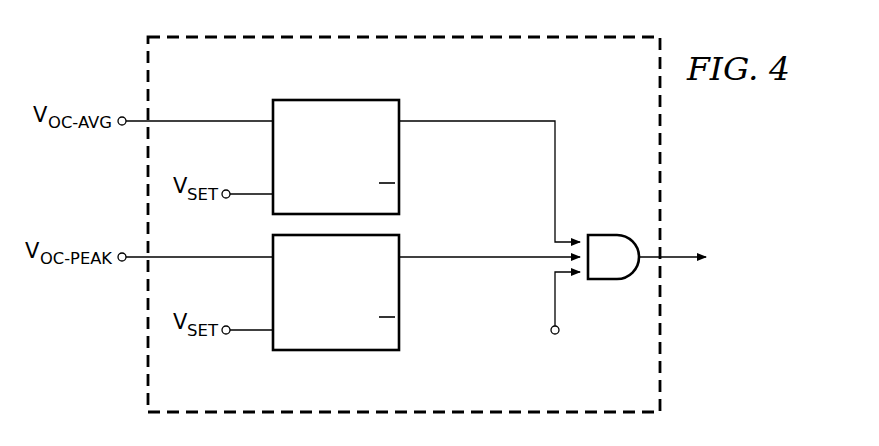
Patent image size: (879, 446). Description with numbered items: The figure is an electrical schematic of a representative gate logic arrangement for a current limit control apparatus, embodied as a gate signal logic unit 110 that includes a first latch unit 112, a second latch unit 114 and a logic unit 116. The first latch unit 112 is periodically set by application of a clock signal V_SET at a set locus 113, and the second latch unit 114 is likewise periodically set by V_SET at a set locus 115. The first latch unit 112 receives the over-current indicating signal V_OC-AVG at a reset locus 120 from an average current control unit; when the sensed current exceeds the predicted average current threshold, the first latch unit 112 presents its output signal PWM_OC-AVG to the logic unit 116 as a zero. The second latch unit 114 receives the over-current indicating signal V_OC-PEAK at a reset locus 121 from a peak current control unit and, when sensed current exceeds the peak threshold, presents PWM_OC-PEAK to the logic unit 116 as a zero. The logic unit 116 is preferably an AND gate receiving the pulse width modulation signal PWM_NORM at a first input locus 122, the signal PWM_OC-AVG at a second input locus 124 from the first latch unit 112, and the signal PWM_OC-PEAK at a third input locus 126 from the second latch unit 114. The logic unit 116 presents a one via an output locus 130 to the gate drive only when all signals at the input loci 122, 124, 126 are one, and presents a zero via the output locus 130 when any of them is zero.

The gate signal logic unit 110 is at (663, 354).
The first latch unit 112 is at (336, 99).
The set locus 113 is at (252, 193).
The second latch unit 114 is at (336, 352).
The set locus 115 is at (255, 332).
The logic unit 116 is at (607, 233).
The reset locus 120 is at (252, 120).
The reset locus 121 is at (255, 259).
The first input locus 122 is at (557, 299).
The second input locus 124 is at (557, 173).
The third input locus 126 is at (470, 259).
The output locus 130 is at (680, 255).